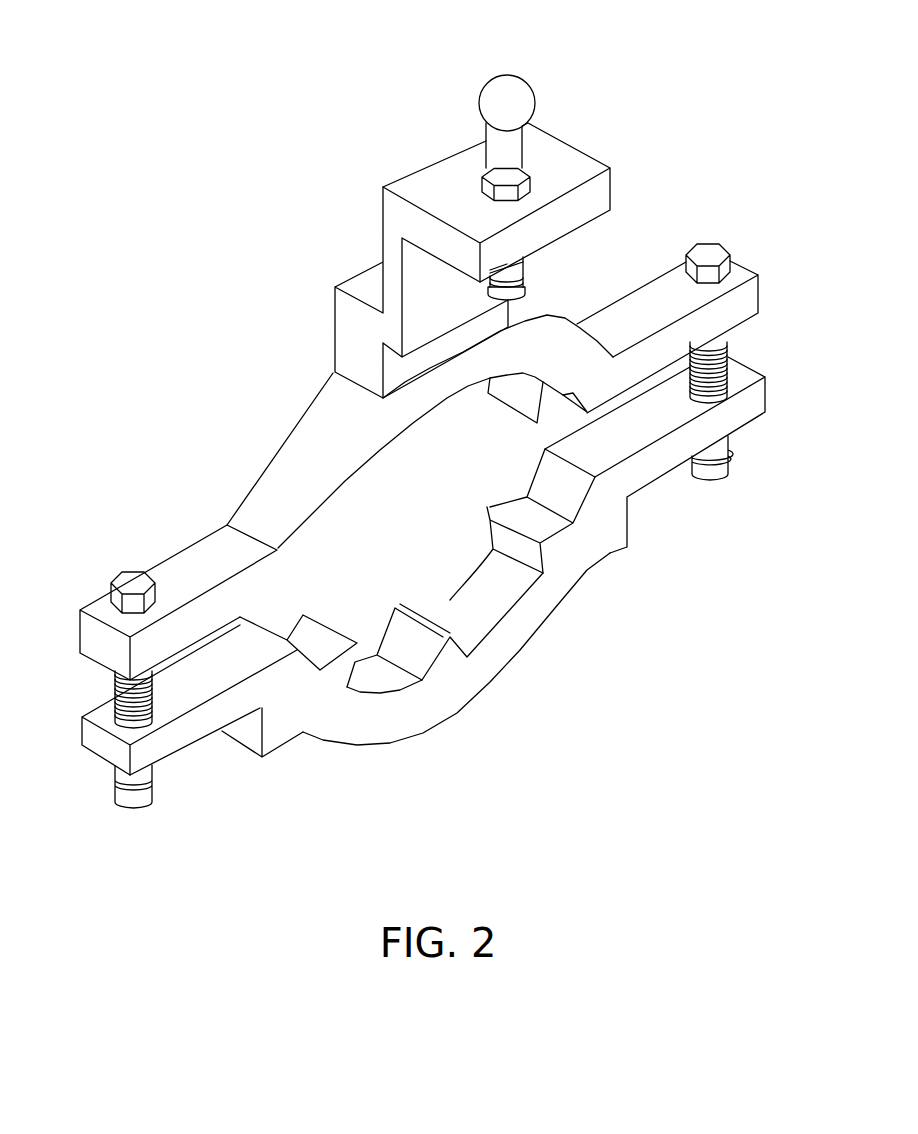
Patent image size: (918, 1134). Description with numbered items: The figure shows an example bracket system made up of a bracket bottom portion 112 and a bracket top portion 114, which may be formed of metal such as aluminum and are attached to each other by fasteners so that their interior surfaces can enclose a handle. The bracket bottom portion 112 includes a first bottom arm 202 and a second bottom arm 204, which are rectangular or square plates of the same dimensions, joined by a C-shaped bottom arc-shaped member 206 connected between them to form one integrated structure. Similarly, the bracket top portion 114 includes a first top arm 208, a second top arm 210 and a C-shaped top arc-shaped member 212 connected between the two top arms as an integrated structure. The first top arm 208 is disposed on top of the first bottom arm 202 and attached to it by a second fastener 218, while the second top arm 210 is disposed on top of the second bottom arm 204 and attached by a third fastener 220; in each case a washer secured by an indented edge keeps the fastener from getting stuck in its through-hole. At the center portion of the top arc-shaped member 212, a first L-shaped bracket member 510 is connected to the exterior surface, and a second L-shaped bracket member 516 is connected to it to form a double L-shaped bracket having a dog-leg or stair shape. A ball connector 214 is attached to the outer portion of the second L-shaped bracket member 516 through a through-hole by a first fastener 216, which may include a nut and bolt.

The bracket bottom portion 112 is at (560, 655).
The bracket top portion 114 is at (244, 415).
The first bottom arm 202 is at (663, 480).
The second bottom arm 204 is at (203, 743).
The bottom arc-shaped member 206 is at (473, 700).
The first top arm 208 is at (660, 297).
The second top arm 210 is at (183, 567).
The top arc-shaped member 212 is at (300, 397).
The ball connector 214 is at (510, 93).
The first fastener 216 is at (523, 267).
The second fastener 218 is at (708, 250).
The third fastener 220 is at (128, 580).
The first L-shaped bracket member 510 is at (365, 290).
The second L-shaped bracket member 516 is at (417, 180).